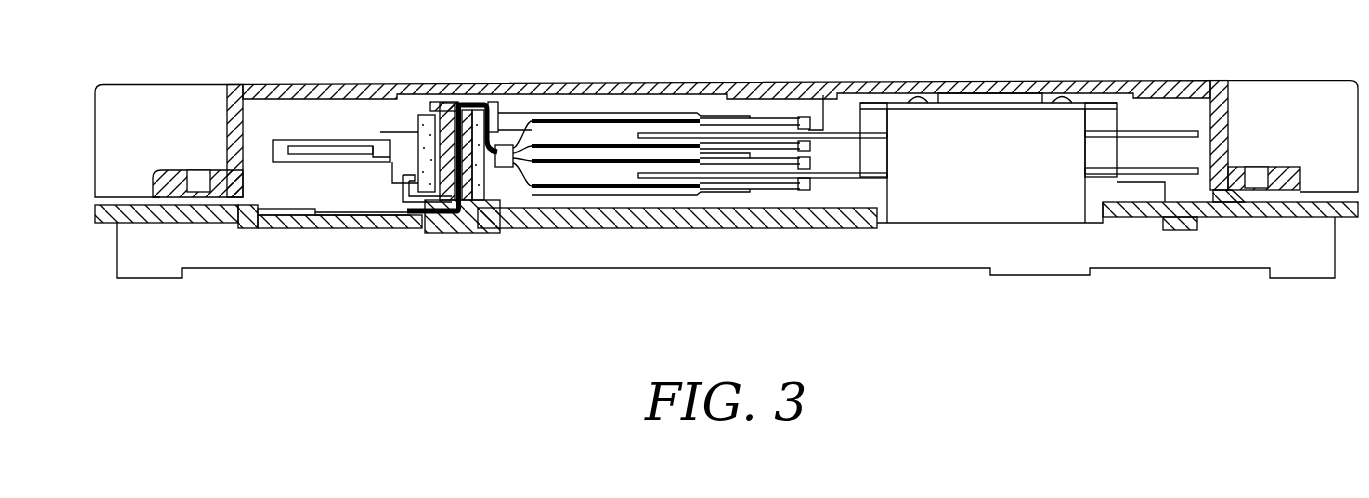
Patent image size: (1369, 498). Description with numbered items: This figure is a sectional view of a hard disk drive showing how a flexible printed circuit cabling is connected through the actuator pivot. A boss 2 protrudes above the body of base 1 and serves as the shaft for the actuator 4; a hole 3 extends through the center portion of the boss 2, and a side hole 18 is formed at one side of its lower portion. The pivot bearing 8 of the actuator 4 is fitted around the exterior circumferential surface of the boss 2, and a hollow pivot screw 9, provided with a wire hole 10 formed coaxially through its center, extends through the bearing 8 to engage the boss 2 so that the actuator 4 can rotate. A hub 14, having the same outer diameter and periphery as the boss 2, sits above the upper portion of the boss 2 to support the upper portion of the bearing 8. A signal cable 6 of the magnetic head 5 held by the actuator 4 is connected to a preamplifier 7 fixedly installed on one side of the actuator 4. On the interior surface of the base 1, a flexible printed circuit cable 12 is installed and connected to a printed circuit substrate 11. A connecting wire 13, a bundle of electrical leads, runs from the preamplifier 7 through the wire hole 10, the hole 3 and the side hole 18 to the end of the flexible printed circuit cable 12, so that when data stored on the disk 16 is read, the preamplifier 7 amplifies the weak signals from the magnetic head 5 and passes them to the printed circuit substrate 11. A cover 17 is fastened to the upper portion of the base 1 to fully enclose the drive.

The base 1 is at (722, 210).
The boss 2 is at (500, 205).
The hole 3 is at (456, 226).
The actuator 4 is at (621, 111).
The magnetic head 5 is at (823, 118).
The signal cable 6 is at (519, 112).
The preamplifier 7 is at (512, 168).
The pivot bearing 8 is at (415, 115).
The pivot screw 9 is at (447, 105).
The wire hole 10 is at (465, 101).
The printed circuit substrate 11 is at (290, 213).
The flexible printed circuit cable 12 is at (350, 216).
The connecting wire 13 is at (452, 227).
The hub 14 is at (428, 117).
The disk 16 is at (845, 130).
The cover 17 is at (752, 88).
The side hole 18 is at (402, 175).